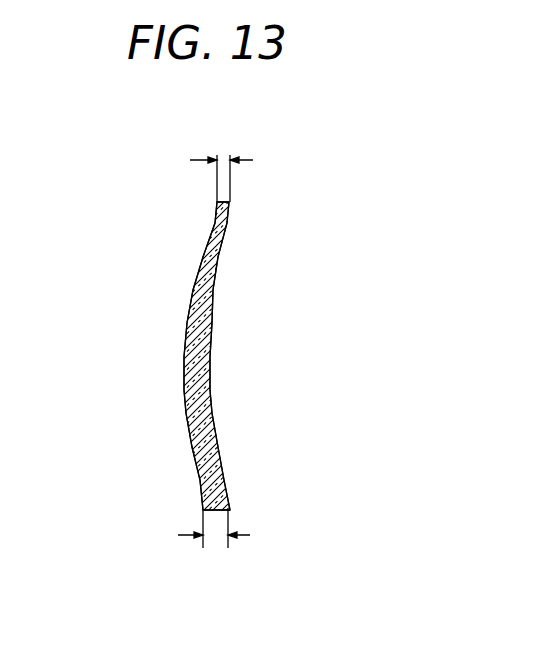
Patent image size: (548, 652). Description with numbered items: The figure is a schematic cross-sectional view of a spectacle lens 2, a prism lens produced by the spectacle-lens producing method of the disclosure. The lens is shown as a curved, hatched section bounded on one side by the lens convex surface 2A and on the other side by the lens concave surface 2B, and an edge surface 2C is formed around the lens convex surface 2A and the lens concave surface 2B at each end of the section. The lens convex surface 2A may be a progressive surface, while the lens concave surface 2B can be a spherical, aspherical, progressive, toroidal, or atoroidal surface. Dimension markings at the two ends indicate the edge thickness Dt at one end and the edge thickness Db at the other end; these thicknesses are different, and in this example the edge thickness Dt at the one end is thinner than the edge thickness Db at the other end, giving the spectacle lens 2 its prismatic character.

The spectacle lens 2 is at (161, 178).
The lens convex surface 2A is at (183, 342).
The lens concave surface 2B is at (210, 347).
The edge surface 2C is at (227, 191).
The edge thickness at one end Dt is at (219, 156).
The edge thickness at the other end Db is at (218, 538).